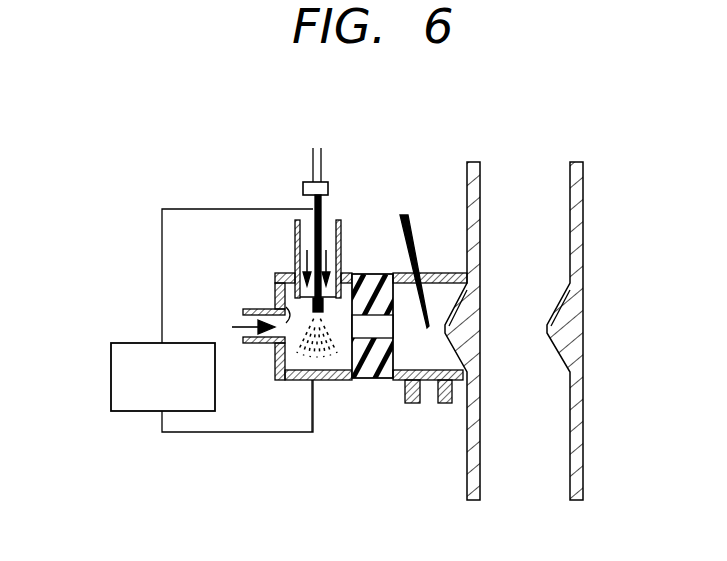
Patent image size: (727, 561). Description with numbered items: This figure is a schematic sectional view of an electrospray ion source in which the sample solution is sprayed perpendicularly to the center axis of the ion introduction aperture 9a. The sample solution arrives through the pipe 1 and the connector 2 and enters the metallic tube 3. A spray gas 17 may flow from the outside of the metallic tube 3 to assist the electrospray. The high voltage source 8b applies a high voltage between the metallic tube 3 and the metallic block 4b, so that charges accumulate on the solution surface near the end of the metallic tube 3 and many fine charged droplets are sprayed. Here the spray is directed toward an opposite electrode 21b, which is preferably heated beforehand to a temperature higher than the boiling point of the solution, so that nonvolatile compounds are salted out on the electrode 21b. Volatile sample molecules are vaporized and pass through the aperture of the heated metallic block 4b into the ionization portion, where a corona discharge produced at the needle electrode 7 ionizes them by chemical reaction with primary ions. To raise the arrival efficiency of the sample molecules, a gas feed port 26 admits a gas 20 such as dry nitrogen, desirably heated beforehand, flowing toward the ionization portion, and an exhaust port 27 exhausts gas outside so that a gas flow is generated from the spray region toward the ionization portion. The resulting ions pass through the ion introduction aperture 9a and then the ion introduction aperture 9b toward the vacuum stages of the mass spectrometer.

The pipe 1 is at (313, 156).
The connector 2 is at (328, 188).
The metallic tube 3 is at (322, 208).
The needle electrode 7 is at (408, 233).
The spray gas 17 is at (300, 256).
The gas 20 is at (238, 325).
The gas feed port 26 is at (275, 298).
The high voltage source 8b is at (111, 388).
The opposite electrode 21b is at (320, 380).
The metallic block 4b is at (373, 380).
The exhaust port 27 is at (420, 403).
The ion introduction aperture 9a is at (445, 331).
The ion introduction aperture 9b is at (547, 328).